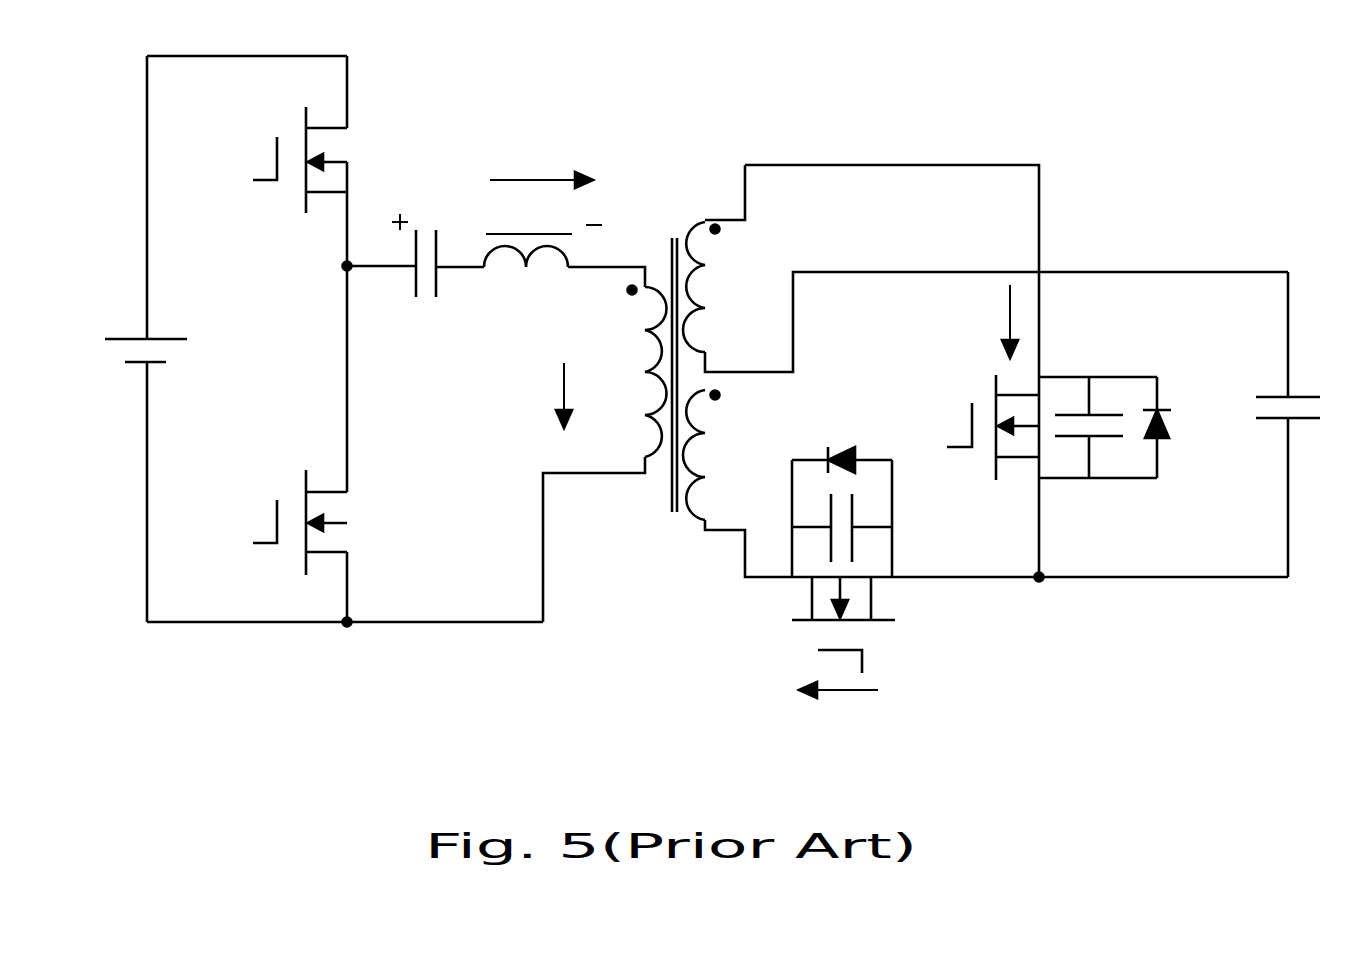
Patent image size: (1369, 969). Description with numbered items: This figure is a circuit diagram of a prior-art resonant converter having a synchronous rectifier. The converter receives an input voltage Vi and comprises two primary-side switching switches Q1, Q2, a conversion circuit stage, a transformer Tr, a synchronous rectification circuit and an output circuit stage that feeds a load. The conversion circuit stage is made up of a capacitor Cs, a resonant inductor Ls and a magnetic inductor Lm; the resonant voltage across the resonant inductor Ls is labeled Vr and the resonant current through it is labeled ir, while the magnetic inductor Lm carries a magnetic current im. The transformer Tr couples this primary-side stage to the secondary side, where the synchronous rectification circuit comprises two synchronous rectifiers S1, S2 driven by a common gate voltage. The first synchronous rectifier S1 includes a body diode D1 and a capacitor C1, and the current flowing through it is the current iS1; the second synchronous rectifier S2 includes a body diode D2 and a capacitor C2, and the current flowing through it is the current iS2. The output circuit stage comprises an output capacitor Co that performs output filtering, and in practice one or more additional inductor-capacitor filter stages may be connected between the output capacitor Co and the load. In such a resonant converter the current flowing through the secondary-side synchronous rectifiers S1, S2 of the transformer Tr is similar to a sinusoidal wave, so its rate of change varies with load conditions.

The input voltage Vi is at (129, 362).
The switching switch Q1 is at (287, 160).
The switching switch Q2 is at (287, 522).
The capacitor Cs is at (419, 277).
The resonant inductor Ls is at (526, 280).
The resonant voltage Vr is at (544, 212).
The resonant current ir is at (541, 164).
The magnetic inductor Lm is at (633, 372).
The magnetic current im is at (548, 395).
The transformer Tr is at (691, 349).
The body diode D1 is at (842, 439).
The capacitor C1 is at (863, 518).
The synchronous rectifier S1 is at (853, 627).
The current flowing through S1 iS1 is at (838, 706).
The synchronous rectifier S2 is at (993, 452).
The current flowing through S2 iS2 is at (991, 321).
The capacitor C2 is at (1098, 451).
The body diode D2 is at (1179, 427).
The output capacitor Co is at (1310, 424).